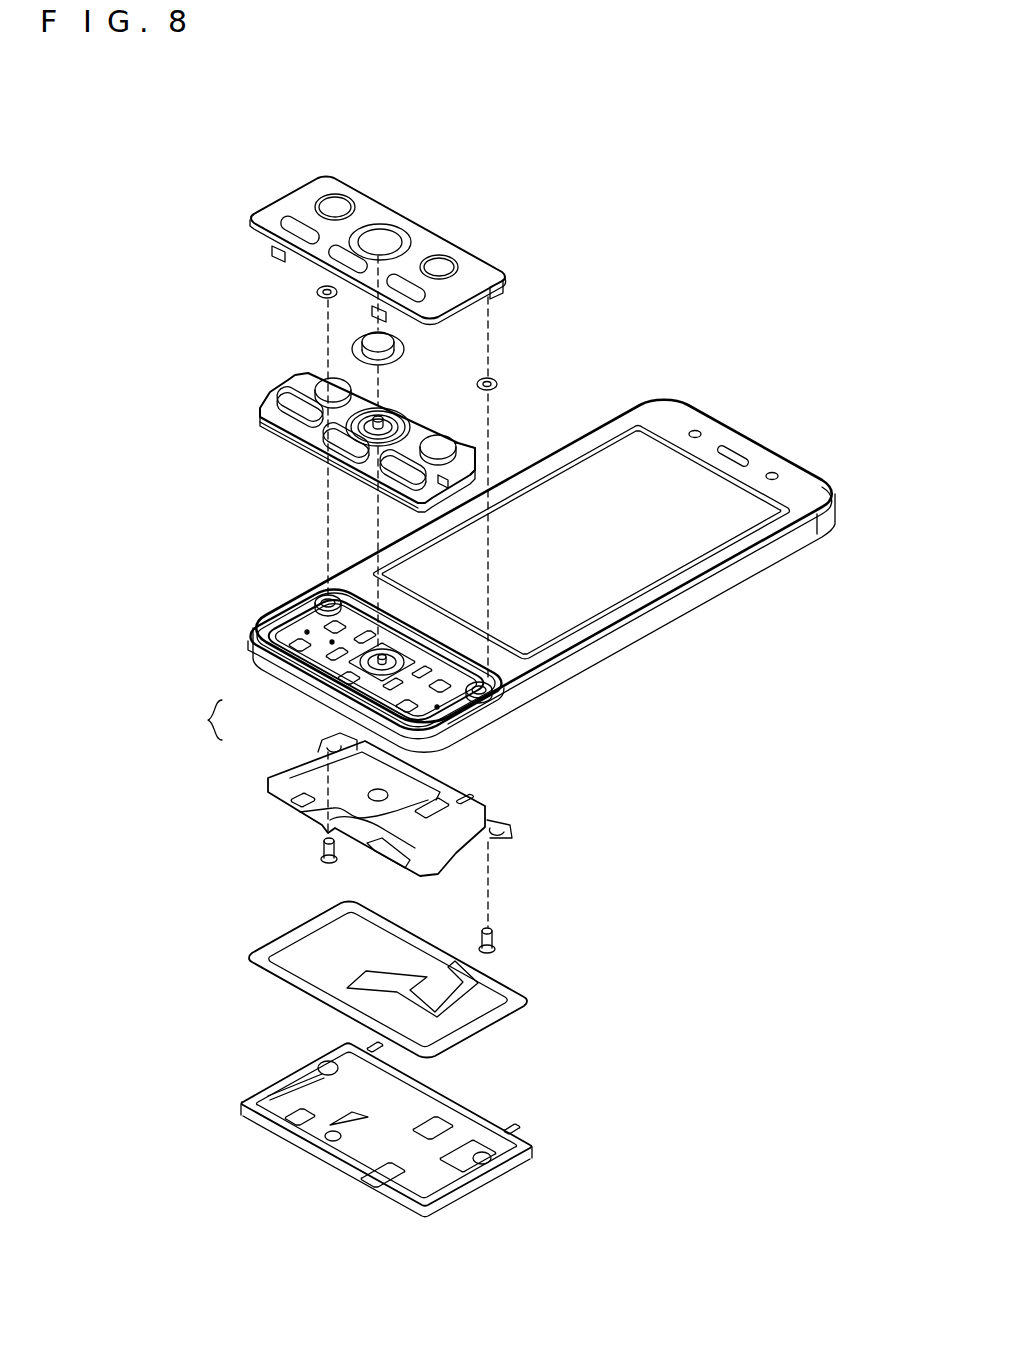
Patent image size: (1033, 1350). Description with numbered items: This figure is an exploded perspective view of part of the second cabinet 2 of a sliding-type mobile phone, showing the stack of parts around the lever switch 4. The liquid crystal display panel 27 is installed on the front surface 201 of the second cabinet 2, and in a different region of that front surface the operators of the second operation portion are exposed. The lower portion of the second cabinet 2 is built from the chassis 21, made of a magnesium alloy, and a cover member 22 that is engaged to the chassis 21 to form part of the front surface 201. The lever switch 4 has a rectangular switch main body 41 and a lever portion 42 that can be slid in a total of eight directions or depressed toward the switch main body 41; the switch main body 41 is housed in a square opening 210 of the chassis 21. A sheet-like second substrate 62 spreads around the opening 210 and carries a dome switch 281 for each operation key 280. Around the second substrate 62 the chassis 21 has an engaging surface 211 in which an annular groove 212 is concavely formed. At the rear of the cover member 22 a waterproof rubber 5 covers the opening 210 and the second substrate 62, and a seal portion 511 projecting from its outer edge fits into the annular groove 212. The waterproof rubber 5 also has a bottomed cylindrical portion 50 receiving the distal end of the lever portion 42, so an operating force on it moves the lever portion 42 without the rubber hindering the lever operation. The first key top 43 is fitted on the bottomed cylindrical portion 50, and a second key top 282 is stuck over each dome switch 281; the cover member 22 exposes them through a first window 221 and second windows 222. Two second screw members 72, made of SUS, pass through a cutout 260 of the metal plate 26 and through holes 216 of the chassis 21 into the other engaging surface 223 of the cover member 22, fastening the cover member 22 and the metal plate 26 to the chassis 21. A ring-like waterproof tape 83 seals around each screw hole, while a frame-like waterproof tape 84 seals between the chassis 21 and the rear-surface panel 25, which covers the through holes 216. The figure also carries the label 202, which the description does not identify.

The second cabinet 2 is at (741, 417).
The lever switch 4 is at (316, 682).
The waterproof rubber 5 is at (258, 405).
The chassis 21 is at (293, 600).
The cover member 22 is at (483, 272).
The rear-surface panel 25 is at (490, 1178).
The metal plate 26 is at (275, 795).
The liquid crystal display panel 27 is at (658, 560).
The switch main body 41 is at (330, 702).
The lever portion 42 is at (350, 672).
The first key top 43 is at (356, 338).
The bottomed cylindrical portion 50 is at (383, 420).
The second substrate 62 is at (424, 731).
The second screw member 72 is at (318, 858).
The waterproof tape 83 is at (316, 292).
The waterproof tape 84 is at (503, 1022).
The front surface 201 is at (306, 196).
The side surface 202 is at (647, 643).
The opening 210 is at (408, 652).
The engaging surface 211 is at (270, 612).
The annular groove 212 is at (246, 634).
The through hole 216 is at (322, 594).
The first window 221 is at (386, 232).
The second window 222 is at (445, 260).
The other engaging surface 223 is at (350, 200).
The cutout 260 is at (322, 742).
The operation key 280 is at (466, 440).
The dome switch 281 is at (450, 698).
The second key top 282 is at (440, 436).
The seal portion 511 is at (285, 435).